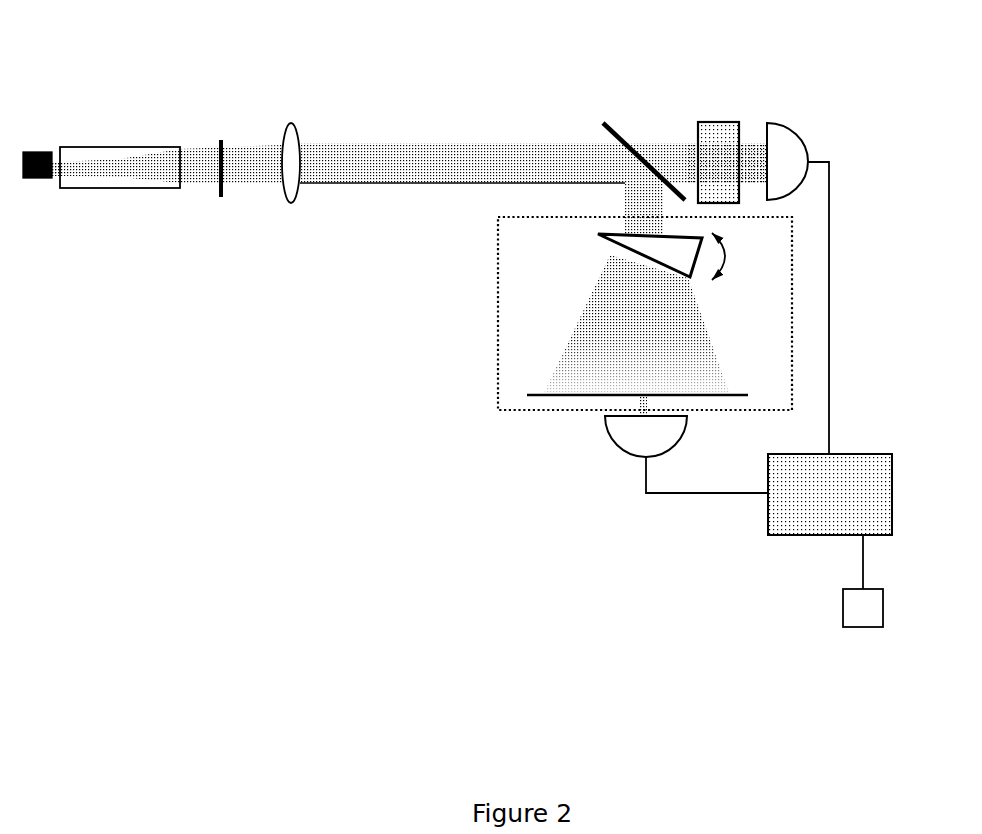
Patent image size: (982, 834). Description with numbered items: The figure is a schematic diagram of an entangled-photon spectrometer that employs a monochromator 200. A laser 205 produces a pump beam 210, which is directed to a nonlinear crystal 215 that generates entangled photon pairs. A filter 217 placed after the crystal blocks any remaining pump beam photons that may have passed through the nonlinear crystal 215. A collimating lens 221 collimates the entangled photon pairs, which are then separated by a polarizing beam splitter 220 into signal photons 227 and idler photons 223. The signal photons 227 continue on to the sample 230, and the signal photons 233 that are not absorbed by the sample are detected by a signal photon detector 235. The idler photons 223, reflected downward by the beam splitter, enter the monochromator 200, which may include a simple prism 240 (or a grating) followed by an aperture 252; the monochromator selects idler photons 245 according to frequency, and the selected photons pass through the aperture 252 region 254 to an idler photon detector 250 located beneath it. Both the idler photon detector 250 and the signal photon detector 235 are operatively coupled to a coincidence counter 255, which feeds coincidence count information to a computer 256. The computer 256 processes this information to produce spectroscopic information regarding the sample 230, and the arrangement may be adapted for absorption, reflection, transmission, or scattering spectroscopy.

The monochromator 200 is at (527, 301).
The laser 205 is at (37, 137).
The pump beam 210 is at (57, 183).
The nonlinear crystal 215 is at (128, 206).
The filter 217 is at (228, 118).
The polarizing beam splitter 220 is at (612, 119).
The collimating lens 221 is at (283, 226).
The idler photons 223 is at (623, 200).
The signal photons 227 is at (656, 131).
The sample 230 is at (731, 102).
The signal photons 233 is at (753, 131).
The signal photon detector 235 is at (817, 129).
The prism 240 is at (596, 237).
The idler photons 245 is at (557, 353).
The idler photon detector 250 is at (596, 451).
The aperture 252 is at (558, 403).
The aperture 254 is at (651, 403).
The coincidence counter 255 is at (792, 546).
The computer 256 is at (852, 641).